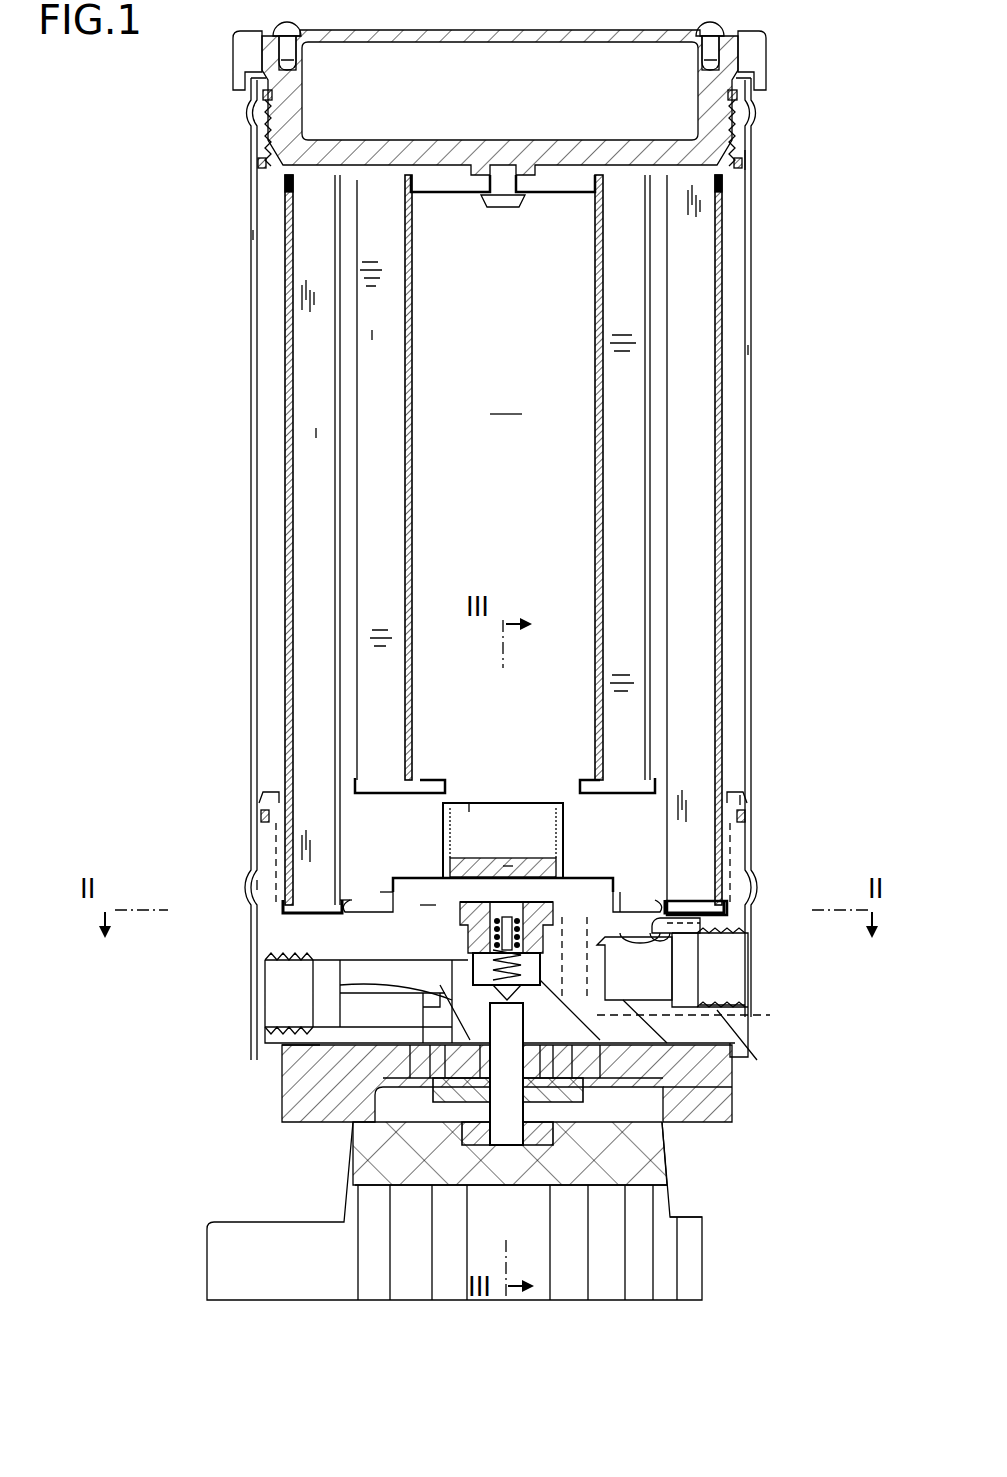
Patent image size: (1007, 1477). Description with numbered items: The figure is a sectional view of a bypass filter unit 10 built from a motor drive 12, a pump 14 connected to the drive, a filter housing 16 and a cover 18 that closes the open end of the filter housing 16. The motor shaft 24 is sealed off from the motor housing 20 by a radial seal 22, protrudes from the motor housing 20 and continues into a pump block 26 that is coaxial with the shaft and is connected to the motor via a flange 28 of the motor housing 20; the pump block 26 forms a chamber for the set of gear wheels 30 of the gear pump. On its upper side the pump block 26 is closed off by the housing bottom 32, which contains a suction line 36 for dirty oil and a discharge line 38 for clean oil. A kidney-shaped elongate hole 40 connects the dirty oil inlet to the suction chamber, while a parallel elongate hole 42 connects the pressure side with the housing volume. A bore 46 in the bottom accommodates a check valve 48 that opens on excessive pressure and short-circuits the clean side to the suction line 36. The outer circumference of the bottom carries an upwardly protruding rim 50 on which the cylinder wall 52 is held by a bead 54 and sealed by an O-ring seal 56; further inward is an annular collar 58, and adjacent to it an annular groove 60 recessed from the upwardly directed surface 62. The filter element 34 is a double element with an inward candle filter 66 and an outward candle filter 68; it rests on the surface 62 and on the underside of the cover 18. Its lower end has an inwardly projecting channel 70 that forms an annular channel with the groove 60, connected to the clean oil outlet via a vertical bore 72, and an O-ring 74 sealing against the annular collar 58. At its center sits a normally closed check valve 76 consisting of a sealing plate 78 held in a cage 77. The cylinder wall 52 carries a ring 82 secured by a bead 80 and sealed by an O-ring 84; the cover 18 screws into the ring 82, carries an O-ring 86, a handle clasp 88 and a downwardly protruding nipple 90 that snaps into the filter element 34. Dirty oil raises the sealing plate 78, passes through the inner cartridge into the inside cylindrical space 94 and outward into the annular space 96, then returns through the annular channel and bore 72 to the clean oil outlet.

The bypass filter unit 10 is at (770, 430).
The motor drive 12 is at (712, 1268).
The pump 14 is at (758, 1068).
The filter housing 16 is at (762, 538).
The cover 18 is at (772, 42).
The motor housing 20 is at (690, 1228).
The radial seal 22 is at (430, 1185).
The motor shaft 24 is at (588, 1192).
The pump block 26 is at (722, 1082).
The flange 28 is at (433, 1090).
The set of gear wheels 30 is at (462, 1122).
The housing bottom 32 is at (318, 1050).
The filter element 34 is at (680, 262).
The suction line 36 is at (270, 1030).
The discharge line 38 is at (542, 972).
The kidney-shaped elongate hole 40 is at (325, 986).
The elongate hole 42 is at (700, 1008).
The bore 46 is at (522, 952).
The check valve 48 is at (522, 893).
The rim 50 is at (746, 805).
The cylinder wall 52 is at (257, 540).
The bead 54 is at (250, 880).
The O-ring seal 56 is at (262, 805).
The annular collar 58 is at (625, 895).
The annular groove 60 is at (430, 912).
The upwardly directed surface 62 is at (665, 925).
The inward candle filter 66 is at (372, 332).
The outward candle filter 68 is at (318, 432).
The channel 70 is at (350, 906).
The vertical bore 72 is at (700, 915).
The O-ring 74 is at (391, 890).
The check valve 76 is at (563, 803).
The cage 77 is at (470, 800).
The sealing plate 78 is at (540, 860).
The bead 80 is at (742, 108).
The ring 82 is at (268, 132).
The O-ring 84 is at (752, 162).
The O-ring 86 is at (266, 96).
The handle clasp 88 is at (278, 28).
The nipple 90 is at (501, 208).
The inside cylindrical space 94 is at (508, 400).
The annular space 96 is at (268, 228).